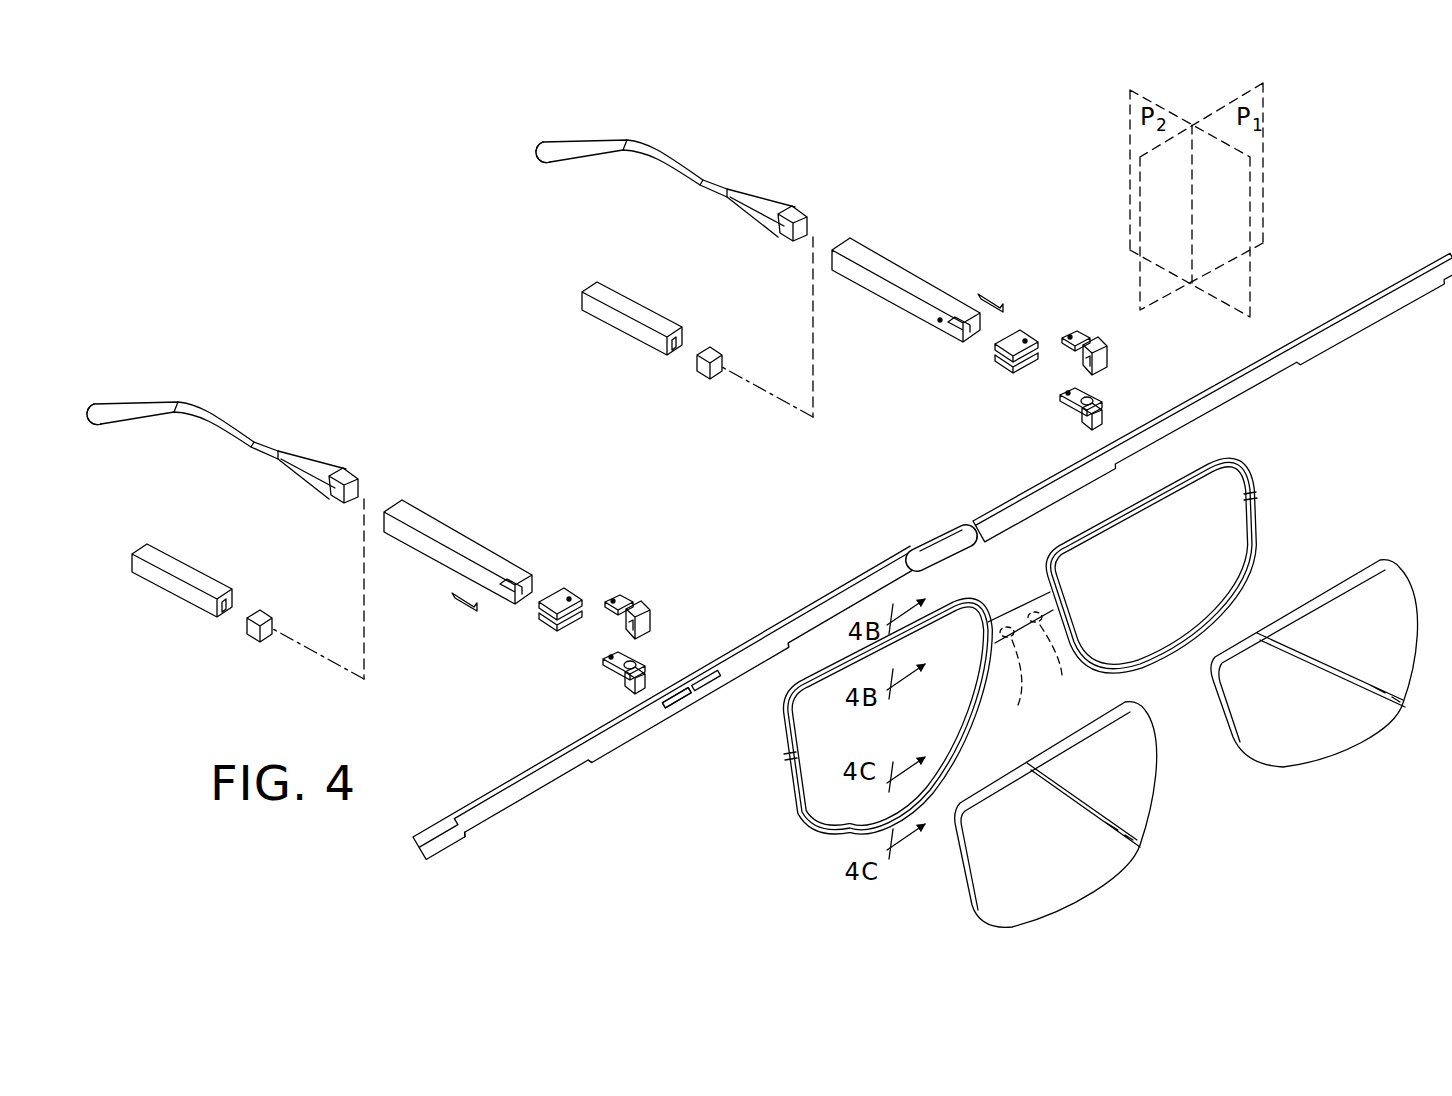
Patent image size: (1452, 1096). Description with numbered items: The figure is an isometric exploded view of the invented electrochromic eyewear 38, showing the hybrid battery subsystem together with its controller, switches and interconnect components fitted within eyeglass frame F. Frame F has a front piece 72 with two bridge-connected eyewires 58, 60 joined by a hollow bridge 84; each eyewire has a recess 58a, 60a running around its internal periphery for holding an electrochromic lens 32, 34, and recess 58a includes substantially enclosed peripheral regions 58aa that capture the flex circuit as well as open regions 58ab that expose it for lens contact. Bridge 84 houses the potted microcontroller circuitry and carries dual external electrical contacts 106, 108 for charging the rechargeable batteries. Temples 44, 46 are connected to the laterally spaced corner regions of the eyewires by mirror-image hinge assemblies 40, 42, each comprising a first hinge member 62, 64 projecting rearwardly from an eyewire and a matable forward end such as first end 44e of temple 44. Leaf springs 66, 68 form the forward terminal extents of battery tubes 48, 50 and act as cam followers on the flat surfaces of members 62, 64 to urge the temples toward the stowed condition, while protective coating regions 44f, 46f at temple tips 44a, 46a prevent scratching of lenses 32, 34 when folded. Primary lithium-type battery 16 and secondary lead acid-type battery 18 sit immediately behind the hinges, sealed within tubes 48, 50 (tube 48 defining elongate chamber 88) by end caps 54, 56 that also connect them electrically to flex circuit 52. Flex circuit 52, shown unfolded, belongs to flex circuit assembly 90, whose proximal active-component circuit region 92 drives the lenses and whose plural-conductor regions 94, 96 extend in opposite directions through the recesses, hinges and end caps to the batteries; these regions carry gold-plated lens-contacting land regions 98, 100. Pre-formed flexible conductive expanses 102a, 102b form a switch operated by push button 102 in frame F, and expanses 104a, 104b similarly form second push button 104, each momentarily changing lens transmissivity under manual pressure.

The EC eyewear 38 is at (328, 272).
The temple 46 is at (825, 158).
The temple tip 46a is at (667, 130).
The region of protective coating 46f is at (596, 160).
The secondary lead acid-type battery 18 is at (648, 322).
The battery tube end cap 56 is at (722, 360).
The battery tube 50 is at (920, 290).
The leaf spring 68 is at (1005, 305).
The first hinge member 64 is at (1088, 335).
The hinge assembly 42 is at (1120, 371).
The temple 44 is at (400, 450).
The temple tip 44a is at (213, 393).
The region of protective coating 44f is at (147, 422).
The first end 44e is at (557, 545).
The primary lithium-type battery 16 is at (198, 585).
The battery tube end cap 54 is at (273, 625).
The battery tube 48 is at (452, 535).
The elongate chamber 88 is at (535, 578).
The leaf spring 66 is at (455, 605).
The first hinge member 62 is at (615, 598).
The hinge assembly 40 is at (523, 685).
The lens-contacting land region 98 is at (778, 650).
The lens-contacting land region 100 is at (1378, 310).
The push button 102 is at (825, 673).
The first flexible conductive expanse 102a is at (662, 722).
The second flexible conductive expanse 102b is at (655, 697).
The second push button 104 is at (850, 655).
The flexible conductive expanse 104a is at (700, 705).
The flexible conductive expanse 104b is at (690, 690).
The flex circuit 52 is at (517, 835).
The active-component circuit region 92 is at (940, 540).
The flex circuit assembly 90 is at (905, 528).
The plural-conductor region 94 is at (703, 590).
The plural-conductor region 96 is at (1068, 452).
The eyewire 58 is at (790, 735).
The recess 58a is at (960, 770).
The enclosed peripheral region 58aa is at (818, 710).
The open region 58ab is at (860, 820).
The front piece 72 is at (800, 835).
The eyewire 60 is at (1255, 470).
The recess 60a is at (1242, 572).
The eyeglass frame F is at (1300, 497).
The hollow bridge 84 is at (1015, 612).
The external electrical contact 106 is at (1026, 678).
The external electrical contact 108 is at (1060, 655).
The electrochromic lens 32 is at (1115, 878).
The electrochromic lens 34 is at (1365, 740).